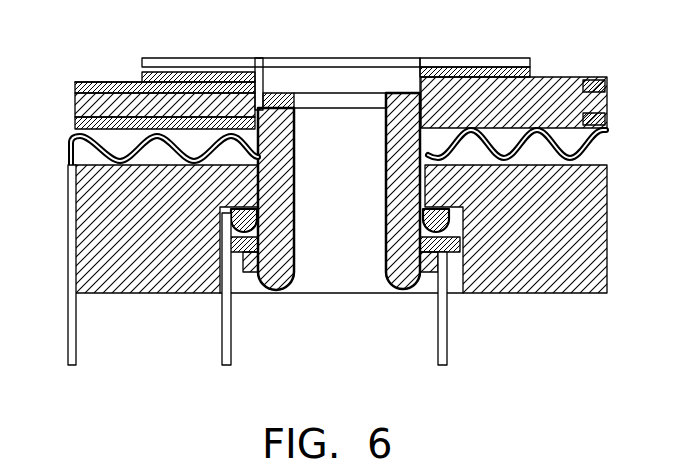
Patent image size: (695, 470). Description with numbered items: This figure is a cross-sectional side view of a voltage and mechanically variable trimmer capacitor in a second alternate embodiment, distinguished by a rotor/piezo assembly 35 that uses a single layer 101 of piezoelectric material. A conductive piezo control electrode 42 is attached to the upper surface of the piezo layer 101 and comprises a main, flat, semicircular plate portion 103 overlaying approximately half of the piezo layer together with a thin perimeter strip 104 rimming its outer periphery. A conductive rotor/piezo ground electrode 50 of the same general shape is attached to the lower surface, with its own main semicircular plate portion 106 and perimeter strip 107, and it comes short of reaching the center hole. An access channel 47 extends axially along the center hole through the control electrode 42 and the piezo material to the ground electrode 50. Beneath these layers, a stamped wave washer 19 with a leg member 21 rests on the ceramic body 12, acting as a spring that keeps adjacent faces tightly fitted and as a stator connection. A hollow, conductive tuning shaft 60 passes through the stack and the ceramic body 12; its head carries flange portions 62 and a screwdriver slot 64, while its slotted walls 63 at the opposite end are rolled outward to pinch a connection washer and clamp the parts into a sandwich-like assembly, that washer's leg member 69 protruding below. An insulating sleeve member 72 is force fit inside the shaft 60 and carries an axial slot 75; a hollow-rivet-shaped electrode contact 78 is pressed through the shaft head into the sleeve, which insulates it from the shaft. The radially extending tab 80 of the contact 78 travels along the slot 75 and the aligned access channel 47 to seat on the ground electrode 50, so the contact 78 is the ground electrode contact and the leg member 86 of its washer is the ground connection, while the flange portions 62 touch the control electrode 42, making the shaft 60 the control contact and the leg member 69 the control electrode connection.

The ceramic body 12 is at (607, 226).
The stamped wave washer 19 is at (68, 149).
The leg member 21 is at (68, 344).
The rotor/piezo assembly 35 is at (608, 99).
The piezo control electrode 42 is at (68, 89).
The access channel 47 is at (244, 78).
The rotor/piezo ground electrode 50 is at (67, 126).
The tuning shaft 60 is at (330, 43).
The flange portions 62 is at (152, 62).
The slotted walls 63 is at (207, 257).
The screwdriver slot 64 is at (530, 62).
The leg member 69 is at (232, 348).
The sleeve member 72 is at (408, 88).
The axial slot 75 is at (277, 100).
The electrode contact 78 is at (299, 252).
The radially extending tab 80 is at (259, 102).
The leg member 86 is at (447, 342).
The piezo layer 101 is at (75, 105).
The main plate portion 103 is at (125, 81).
The perimeter strip 104 is at (608, 80).
The main plate portion 106 is at (75, 192).
The perimeter strip 107 is at (608, 127).